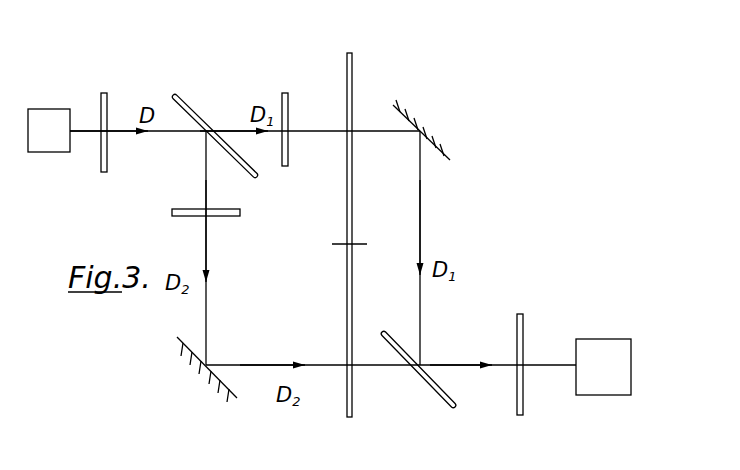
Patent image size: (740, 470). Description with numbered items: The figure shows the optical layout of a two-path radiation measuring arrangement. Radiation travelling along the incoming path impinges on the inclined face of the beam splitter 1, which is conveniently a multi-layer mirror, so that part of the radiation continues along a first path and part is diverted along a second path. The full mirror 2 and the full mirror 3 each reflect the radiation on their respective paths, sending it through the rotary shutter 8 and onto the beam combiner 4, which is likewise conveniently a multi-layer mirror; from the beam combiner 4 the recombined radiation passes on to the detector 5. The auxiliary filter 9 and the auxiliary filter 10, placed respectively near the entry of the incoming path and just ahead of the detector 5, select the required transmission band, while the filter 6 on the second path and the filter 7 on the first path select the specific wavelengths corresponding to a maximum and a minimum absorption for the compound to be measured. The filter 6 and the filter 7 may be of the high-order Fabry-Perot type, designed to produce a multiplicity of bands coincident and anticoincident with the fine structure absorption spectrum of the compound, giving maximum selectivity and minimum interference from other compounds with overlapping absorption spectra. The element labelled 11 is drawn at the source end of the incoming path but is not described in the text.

The beam splitter 1 is at (198, 114).
The full mirror 2 is at (440, 138).
The full mirror 3 is at (210, 385).
The beam combiner 4 is at (432, 390).
The detector 5 is at (587, 345).
The filter 6 is at (178, 210).
The filter 7 is at (285, 120).
The rotary shutter 8 is at (352, 246).
The auxiliary filter 9 is at (105, 108).
The auxiliary filter 10 is at (517, 400).
The light source 11 is at (68, 128).